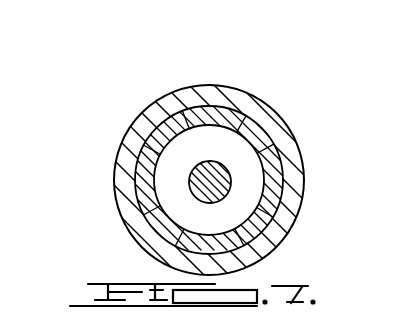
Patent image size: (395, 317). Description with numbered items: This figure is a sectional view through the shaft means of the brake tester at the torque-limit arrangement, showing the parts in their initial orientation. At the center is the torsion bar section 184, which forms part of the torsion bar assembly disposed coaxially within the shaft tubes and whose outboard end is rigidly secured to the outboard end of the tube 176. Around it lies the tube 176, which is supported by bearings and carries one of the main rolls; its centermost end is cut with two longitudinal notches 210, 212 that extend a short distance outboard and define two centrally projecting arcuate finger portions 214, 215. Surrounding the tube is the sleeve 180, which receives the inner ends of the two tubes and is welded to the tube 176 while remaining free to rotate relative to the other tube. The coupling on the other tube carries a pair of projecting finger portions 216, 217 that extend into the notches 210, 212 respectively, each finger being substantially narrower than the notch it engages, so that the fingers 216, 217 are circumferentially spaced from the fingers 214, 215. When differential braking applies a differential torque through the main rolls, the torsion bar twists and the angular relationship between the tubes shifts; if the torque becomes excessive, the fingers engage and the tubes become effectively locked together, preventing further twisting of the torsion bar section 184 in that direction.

The tube 176 is at (136, 166).
The sleeve 180 is at (216, 87).
The torsion bar section 184 is at (208, 161).
The longitudinal notch 210 is at (163, 128).
The longitudinal notch 212 is at (164, 228).
The arcuate finger portion 214 is at (272, 187).
The arcuate finger portion 215 is at (148, 185).
The finger portion 216 is at (223, 111).
The finger portion 217 is at (226, 258).